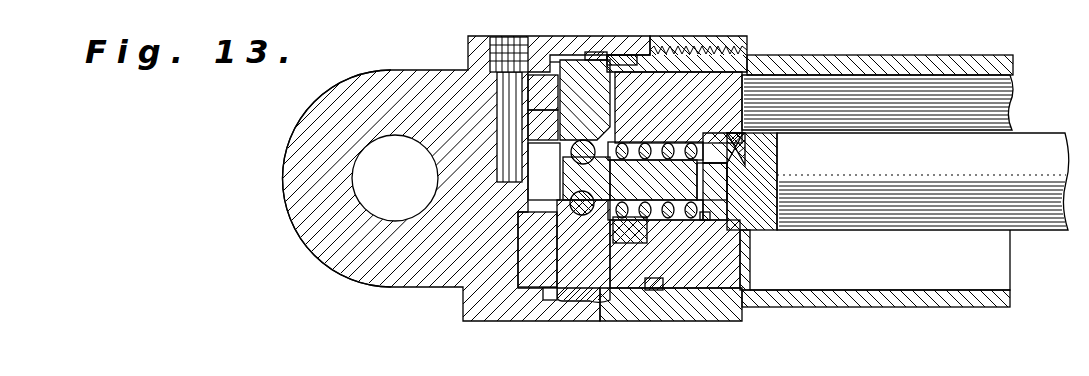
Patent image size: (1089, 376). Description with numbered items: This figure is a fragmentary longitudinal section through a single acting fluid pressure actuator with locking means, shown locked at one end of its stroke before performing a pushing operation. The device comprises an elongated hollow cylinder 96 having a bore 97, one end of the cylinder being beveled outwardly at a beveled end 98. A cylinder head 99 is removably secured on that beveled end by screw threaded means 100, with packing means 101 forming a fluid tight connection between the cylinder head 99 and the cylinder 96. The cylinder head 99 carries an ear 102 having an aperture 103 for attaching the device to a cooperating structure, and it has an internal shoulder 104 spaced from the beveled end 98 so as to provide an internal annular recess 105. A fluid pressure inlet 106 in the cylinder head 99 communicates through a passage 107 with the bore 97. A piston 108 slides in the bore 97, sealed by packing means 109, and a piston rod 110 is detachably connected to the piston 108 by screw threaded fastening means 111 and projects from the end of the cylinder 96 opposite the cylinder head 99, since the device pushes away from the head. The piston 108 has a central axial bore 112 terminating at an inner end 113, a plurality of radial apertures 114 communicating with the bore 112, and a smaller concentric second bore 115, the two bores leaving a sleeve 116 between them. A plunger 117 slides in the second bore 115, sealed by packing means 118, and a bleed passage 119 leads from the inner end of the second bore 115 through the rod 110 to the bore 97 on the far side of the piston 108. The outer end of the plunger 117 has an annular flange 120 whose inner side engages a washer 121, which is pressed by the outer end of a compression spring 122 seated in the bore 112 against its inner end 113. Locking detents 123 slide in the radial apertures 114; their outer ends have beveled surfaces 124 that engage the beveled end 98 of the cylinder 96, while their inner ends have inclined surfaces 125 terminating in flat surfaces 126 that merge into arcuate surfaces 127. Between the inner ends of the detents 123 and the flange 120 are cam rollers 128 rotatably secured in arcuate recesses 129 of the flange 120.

The cylinder 96 is at (951, 51).
The bore 97 is at (1013, 82).
The beveled end 98 is at (617, 56).
The cylinder head 99 is at (485, 324).
The screw threaded means 100 is at (715, 40).
The packing means 101 is at (652, 50).
The ear 102 is at (356, 283).
The aperture 103 is at (362, 186).
The internal shoulder 104 is at (546, 300).
The internal annular recess 105 is at (590, 52).
The fluid pressure inlet 106 is at (530, 42).
The passage 107 is at (492, 108).
The piston 108 is at (758, 269).
The packing means 109 is at (657, 292).
The piston rod 110 is at (1000, 233).
The screw threaded fastening means 111 is at (750, 243).
The central axial bore 112 is at (530, 214).
The inner end of bore 113 is at (704, 220).
The radial apertures 114 is at (617, 98).
The second bore 115 is at (755, 181).
The sleeve 116 is at (690, 150).
The plunger 117 is at (632, 150).
The packing means 118 is at (662, 216).
The bleed passage 119 is at (746, 148).
The annular flange 120 is at (548, 171).
The washer 121 is at (634, 234).
The compression spring 122 is at (675, 254).
The locking detents 123 is at (570, 62).
The beveled surfaces 124 is at (583, 251).
The inclined surfaces 125 is at (588, 100).
The flat surfaces 126 is at (562, 99).
The arcuate surfaces 127 is at (562, 128).
The cam rollers 128 is at (592, 162).
The arcuate recesses 129 is at (566, 190).